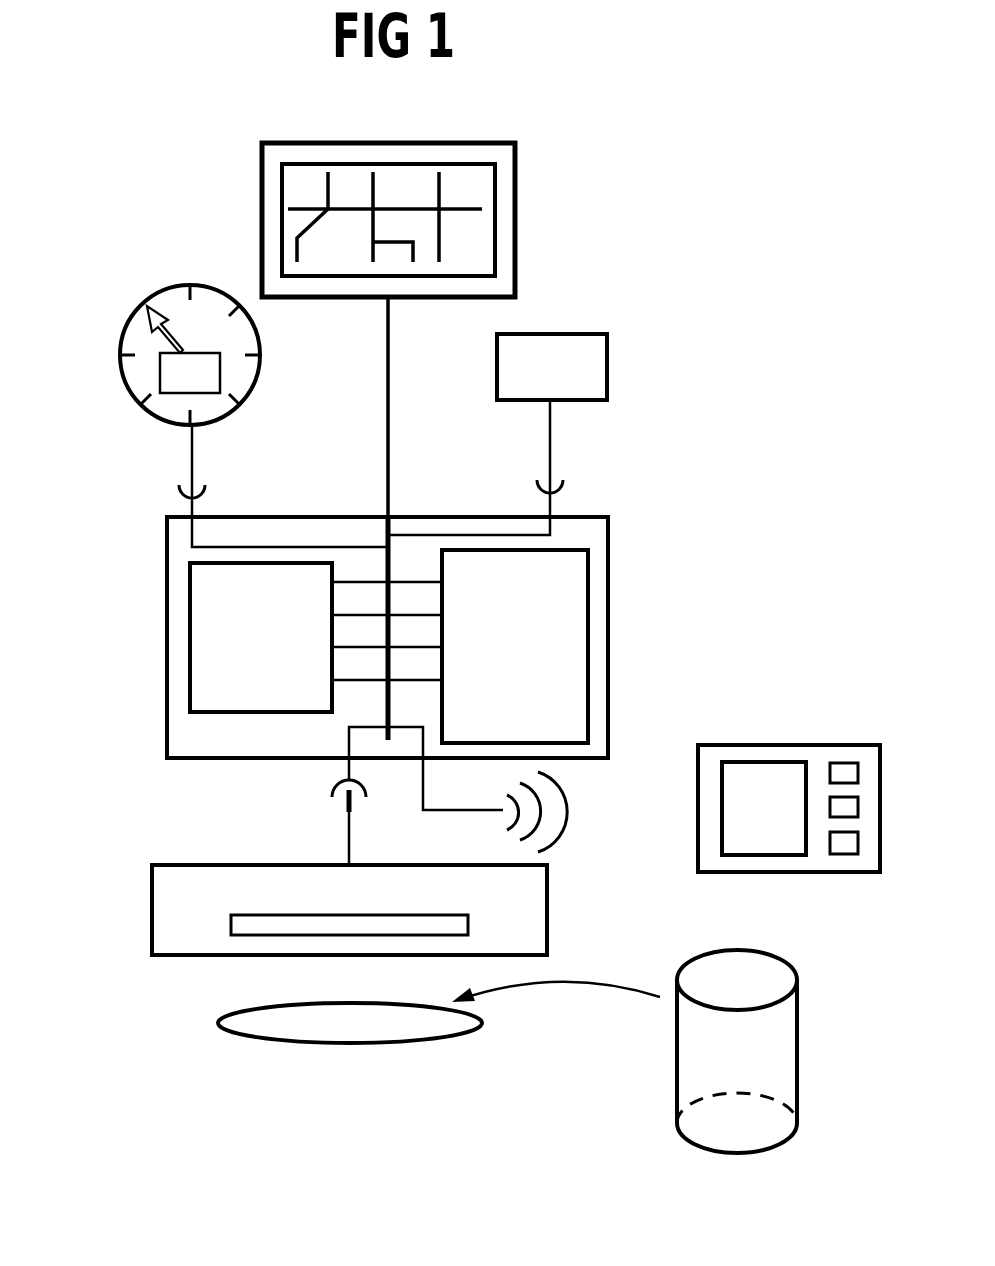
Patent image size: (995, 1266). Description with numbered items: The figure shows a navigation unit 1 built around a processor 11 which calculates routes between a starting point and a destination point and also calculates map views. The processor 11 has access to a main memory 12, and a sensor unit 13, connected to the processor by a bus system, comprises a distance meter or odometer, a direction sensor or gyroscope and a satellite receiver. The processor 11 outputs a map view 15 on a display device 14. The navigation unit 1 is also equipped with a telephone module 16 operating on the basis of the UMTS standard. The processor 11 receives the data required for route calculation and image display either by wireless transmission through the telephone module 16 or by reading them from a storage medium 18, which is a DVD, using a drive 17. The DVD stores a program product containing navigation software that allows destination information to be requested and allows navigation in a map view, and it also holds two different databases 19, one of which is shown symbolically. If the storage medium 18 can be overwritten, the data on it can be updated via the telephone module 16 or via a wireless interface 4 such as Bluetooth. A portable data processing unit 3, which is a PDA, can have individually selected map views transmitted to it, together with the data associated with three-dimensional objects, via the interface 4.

The navigation unit 1 is at (97, 741).
The portable data processing unit 3 is at (762, 745).
The wireless interface 4 is at (420, 793).
The processor 11 is at (588, 643).
The main memory 12 is at (188, 645).
The sensor unit 13 is at (120, 370).
The display device 14 is at (517, 238).
The map view 15 is at (472, 193).
The telephone module 16 is at (607, 360).
The drive 17 is at (547, 893).
The storage medium 18 is at (348, 1045).
The database 19 is at (798, 1045).